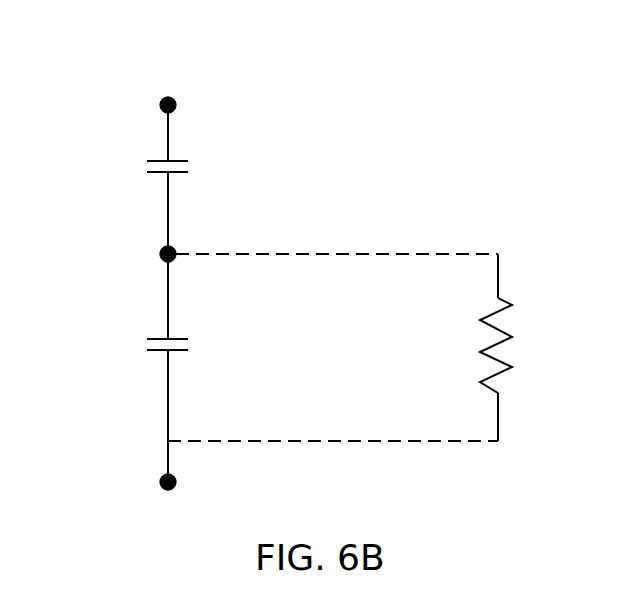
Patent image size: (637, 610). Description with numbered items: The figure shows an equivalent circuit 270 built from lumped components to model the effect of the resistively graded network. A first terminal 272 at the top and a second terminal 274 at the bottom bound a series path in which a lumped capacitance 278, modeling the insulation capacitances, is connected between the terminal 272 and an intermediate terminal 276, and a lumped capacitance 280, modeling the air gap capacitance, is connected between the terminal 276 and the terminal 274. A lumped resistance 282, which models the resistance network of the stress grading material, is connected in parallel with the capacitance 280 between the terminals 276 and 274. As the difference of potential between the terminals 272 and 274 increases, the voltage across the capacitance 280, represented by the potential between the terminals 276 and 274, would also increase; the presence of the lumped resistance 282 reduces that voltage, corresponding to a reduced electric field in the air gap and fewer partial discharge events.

The equivalent circuit 270 is at (337, 90).
The terminal 272 is at (155, 105).
The terminal 274 is at (158, 478).
The terminal 276 is at (158, 248).
The lumped capacitance 278 is at (180, 148).
The lumped capacitance 280 is at (143, 339).
The lumped resistance 282 is at (478, 340).